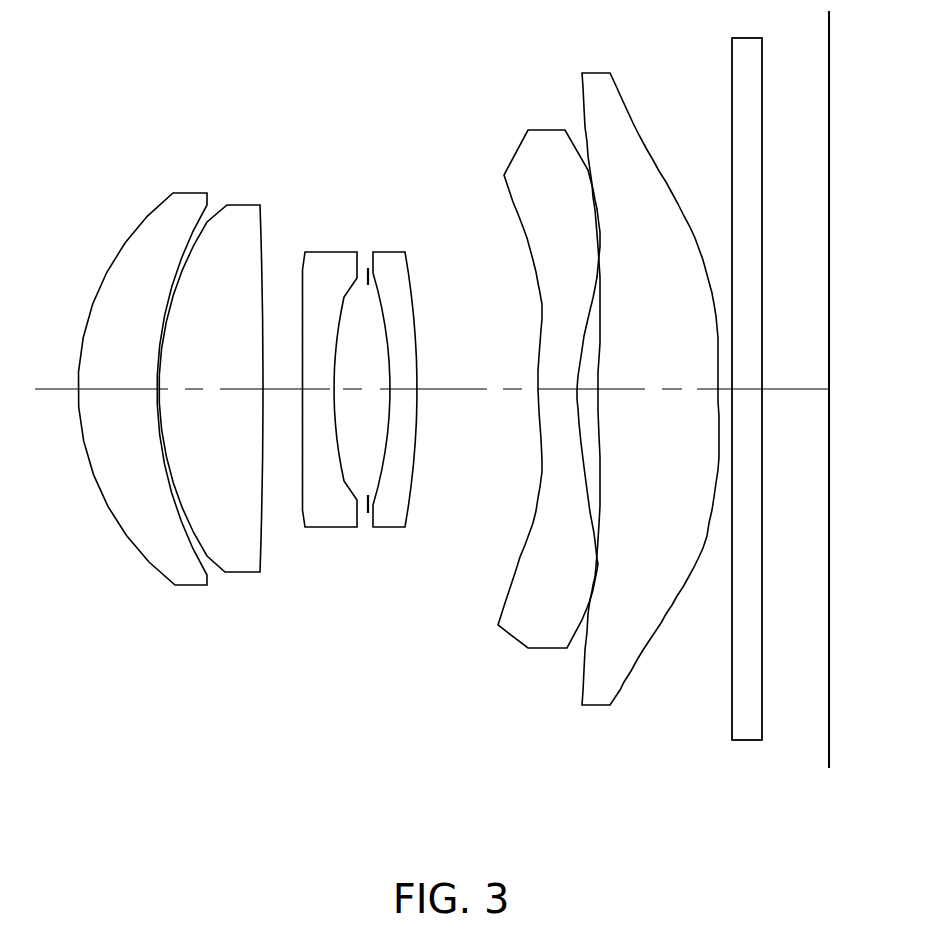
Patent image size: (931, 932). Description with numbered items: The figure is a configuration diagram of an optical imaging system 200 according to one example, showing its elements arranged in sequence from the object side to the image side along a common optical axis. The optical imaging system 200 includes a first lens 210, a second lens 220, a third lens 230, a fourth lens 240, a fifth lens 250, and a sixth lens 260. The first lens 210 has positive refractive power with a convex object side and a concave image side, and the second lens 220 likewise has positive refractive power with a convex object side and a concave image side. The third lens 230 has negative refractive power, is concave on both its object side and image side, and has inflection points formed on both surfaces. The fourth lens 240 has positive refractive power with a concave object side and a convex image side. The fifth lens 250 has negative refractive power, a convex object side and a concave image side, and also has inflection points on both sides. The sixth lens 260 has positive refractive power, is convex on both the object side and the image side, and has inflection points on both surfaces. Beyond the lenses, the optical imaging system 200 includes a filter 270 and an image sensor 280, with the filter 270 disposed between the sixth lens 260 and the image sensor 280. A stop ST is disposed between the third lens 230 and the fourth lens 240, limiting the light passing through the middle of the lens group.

The optical imaging system 200 is at (370, 128).
The first lens 210 is at (190, 587).
The second lens 220 is at (245, 574).
The third lens 230 is at (330, 528).
The fourth lens 240 is at (385, 528).
The fifth lens 250 is at (542, 650).
The sixth lens 260 is at (595, 707).
The filter 270 is at (745, 742).
The image sensor 280 is at (828, 742).
The stop ST is at (368, 268).